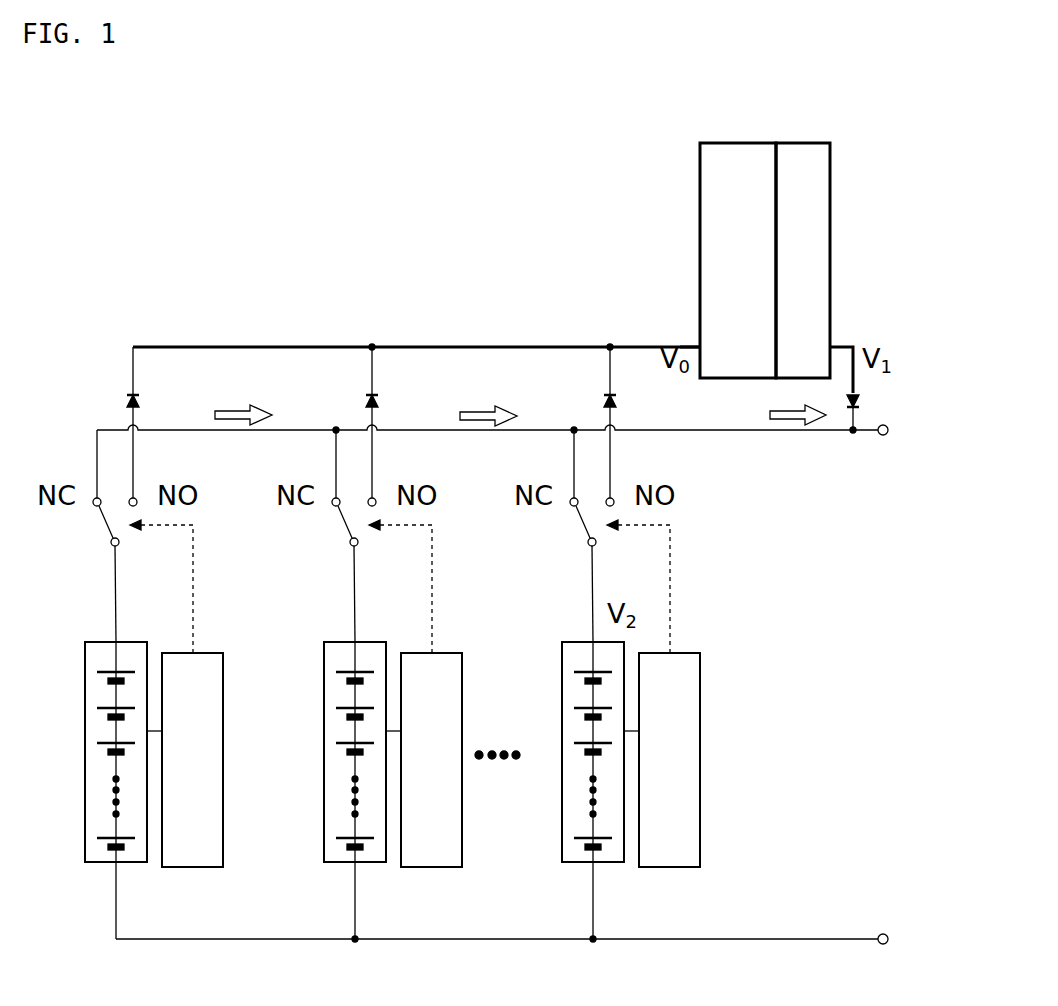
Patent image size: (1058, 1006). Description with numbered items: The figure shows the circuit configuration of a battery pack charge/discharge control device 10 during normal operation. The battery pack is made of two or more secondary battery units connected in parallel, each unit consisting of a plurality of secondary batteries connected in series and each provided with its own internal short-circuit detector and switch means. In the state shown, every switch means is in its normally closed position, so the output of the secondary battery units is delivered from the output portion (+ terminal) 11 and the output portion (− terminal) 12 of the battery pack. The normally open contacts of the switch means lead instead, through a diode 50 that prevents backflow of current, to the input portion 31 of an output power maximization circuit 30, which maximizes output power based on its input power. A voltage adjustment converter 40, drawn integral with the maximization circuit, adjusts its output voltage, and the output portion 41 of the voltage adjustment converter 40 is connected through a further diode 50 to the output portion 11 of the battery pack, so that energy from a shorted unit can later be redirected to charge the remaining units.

The battery pack charge/discharge control device 10 is at (427, 191).
The output portion (+ terminal) of the battery pack 11 is at (884, 428).
The output portion (− terminal) of the battery pack 12 is at (529, 940).
The output power maximization circuit 30 is at (714, 260).
The input portion of the output power maximization circuit 31 is at (679, 330).
The voltage adjustment converter 40 is at (826, 260).
The output portion of the voltage adjustment converter 41 is at (850, 353).
The diode 50 is at (154, 398).